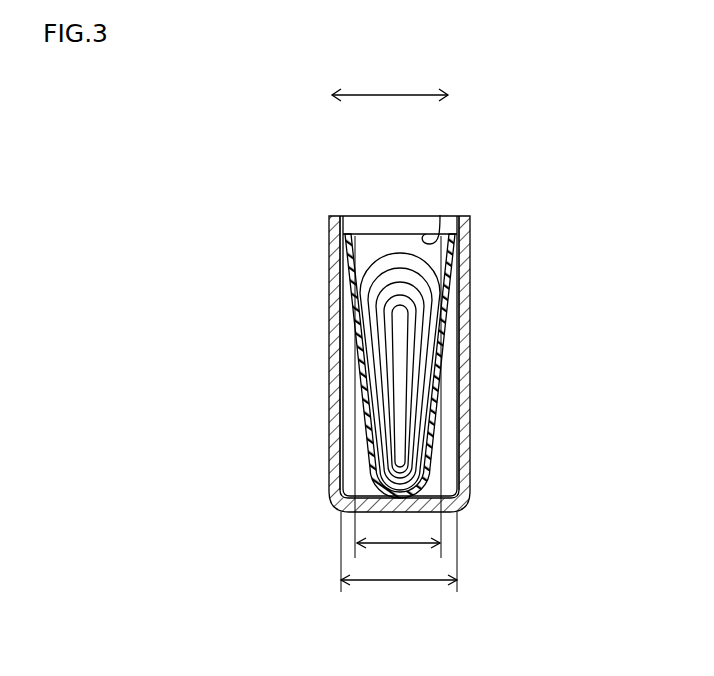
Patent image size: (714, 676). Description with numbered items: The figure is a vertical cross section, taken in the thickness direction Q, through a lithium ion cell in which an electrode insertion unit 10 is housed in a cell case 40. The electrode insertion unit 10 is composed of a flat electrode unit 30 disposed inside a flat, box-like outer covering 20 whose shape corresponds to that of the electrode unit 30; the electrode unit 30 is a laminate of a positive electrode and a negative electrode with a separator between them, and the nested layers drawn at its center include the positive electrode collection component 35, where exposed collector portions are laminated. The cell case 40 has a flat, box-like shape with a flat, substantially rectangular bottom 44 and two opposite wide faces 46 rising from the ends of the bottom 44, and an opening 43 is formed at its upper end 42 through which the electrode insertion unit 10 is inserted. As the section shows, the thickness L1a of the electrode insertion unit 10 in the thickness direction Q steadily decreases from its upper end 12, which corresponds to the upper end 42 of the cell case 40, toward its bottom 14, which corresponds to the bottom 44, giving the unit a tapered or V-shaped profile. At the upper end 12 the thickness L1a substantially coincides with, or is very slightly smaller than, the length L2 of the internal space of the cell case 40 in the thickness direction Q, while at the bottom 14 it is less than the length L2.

The electrode insertion unit 10 is at (351, 229).
The upper end of electrode insertion unit 12 is at (440, 215).
The bottom of electrode insertion unit 14 is at (350, 512).
The outer covering 20 is at (448, 452).
The electrode unit 30 is at (388, 245).
The positive electrode collection component 35 is at (427, 320).
The cell case 40 is at (309, 275).
The upper end of cell case 42 is at (468, 222).
The opening 43 is at (368, 233).
The bottom 44 is at (432, 512).
The wide faces 46 is at (347, 364).
The thickness direction Q is at (378, 95).
The thickness of electrode insertion unit ends L1a is at (398, 557).
The length of cell case internal space L2 is at (399, 562).